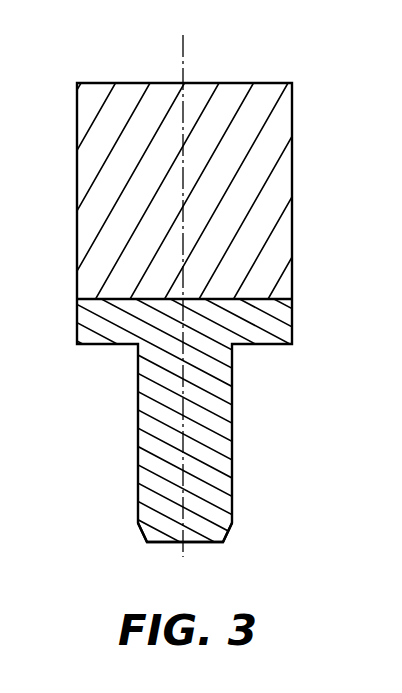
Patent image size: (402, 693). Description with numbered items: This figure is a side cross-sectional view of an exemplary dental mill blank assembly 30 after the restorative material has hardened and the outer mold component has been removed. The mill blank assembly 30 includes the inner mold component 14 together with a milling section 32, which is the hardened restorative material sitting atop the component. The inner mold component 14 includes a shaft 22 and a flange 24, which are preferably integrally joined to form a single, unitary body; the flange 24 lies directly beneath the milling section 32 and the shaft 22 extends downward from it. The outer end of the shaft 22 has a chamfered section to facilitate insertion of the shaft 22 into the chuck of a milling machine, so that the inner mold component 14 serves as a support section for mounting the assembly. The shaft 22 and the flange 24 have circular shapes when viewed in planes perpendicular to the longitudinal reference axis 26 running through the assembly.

The dental mill blank assembly 30 is at (305, 46).
The milling section 32 is at (277, 193).
The flange 24 is at (282, 330).
The inner mold component 14 is at (242, 455).
The shaft 22 is at (218, 528).
The longitudinal reference axis 26 is at (178, 58).